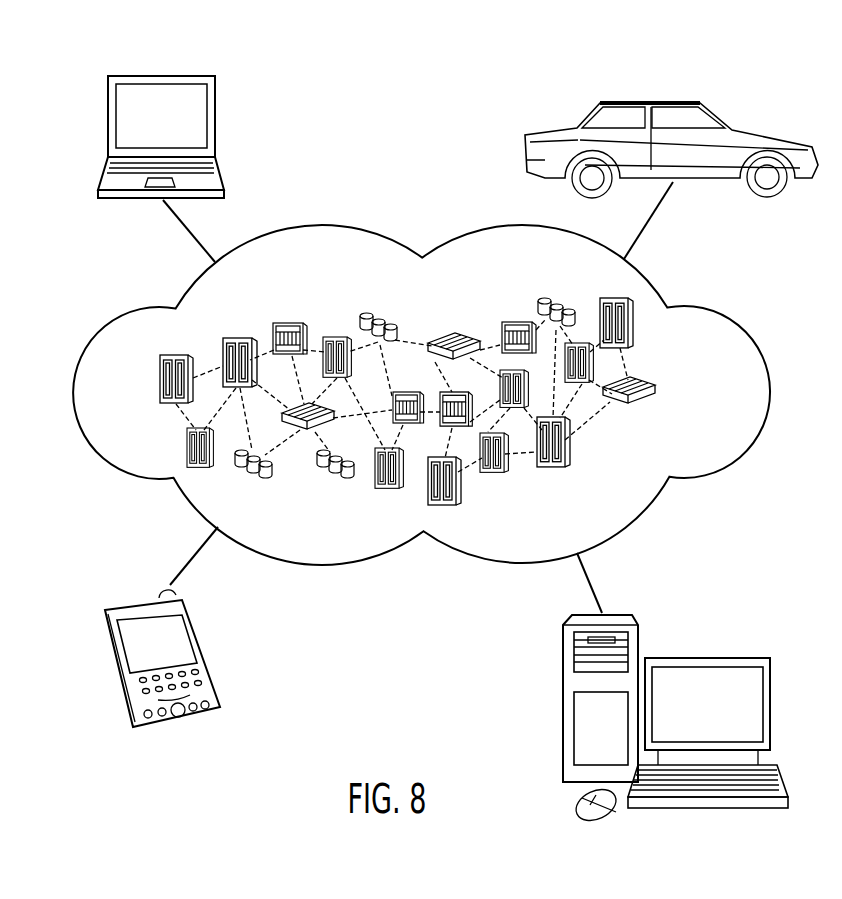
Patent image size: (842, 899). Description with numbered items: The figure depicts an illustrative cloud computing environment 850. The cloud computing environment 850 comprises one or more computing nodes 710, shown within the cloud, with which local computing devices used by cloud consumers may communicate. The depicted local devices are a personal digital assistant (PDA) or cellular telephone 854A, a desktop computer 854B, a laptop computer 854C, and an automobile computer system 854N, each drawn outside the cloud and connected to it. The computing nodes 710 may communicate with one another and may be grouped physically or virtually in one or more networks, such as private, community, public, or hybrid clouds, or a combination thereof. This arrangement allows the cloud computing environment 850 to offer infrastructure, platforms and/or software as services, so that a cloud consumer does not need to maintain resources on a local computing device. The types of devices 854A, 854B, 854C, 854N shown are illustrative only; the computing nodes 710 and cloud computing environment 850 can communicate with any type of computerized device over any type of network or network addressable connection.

The cloud computing environment 850 is at (718, 312).
The computing nodes 710 is at (663, 392).
The personal digital assistant (PDA) or cellular telephone 854A is at (143, 602).
The desktop computer 854B is at (707, 657).
The laptop computer 854C is at (160, 75).
The automobile computer system 854N is at (653, 98).